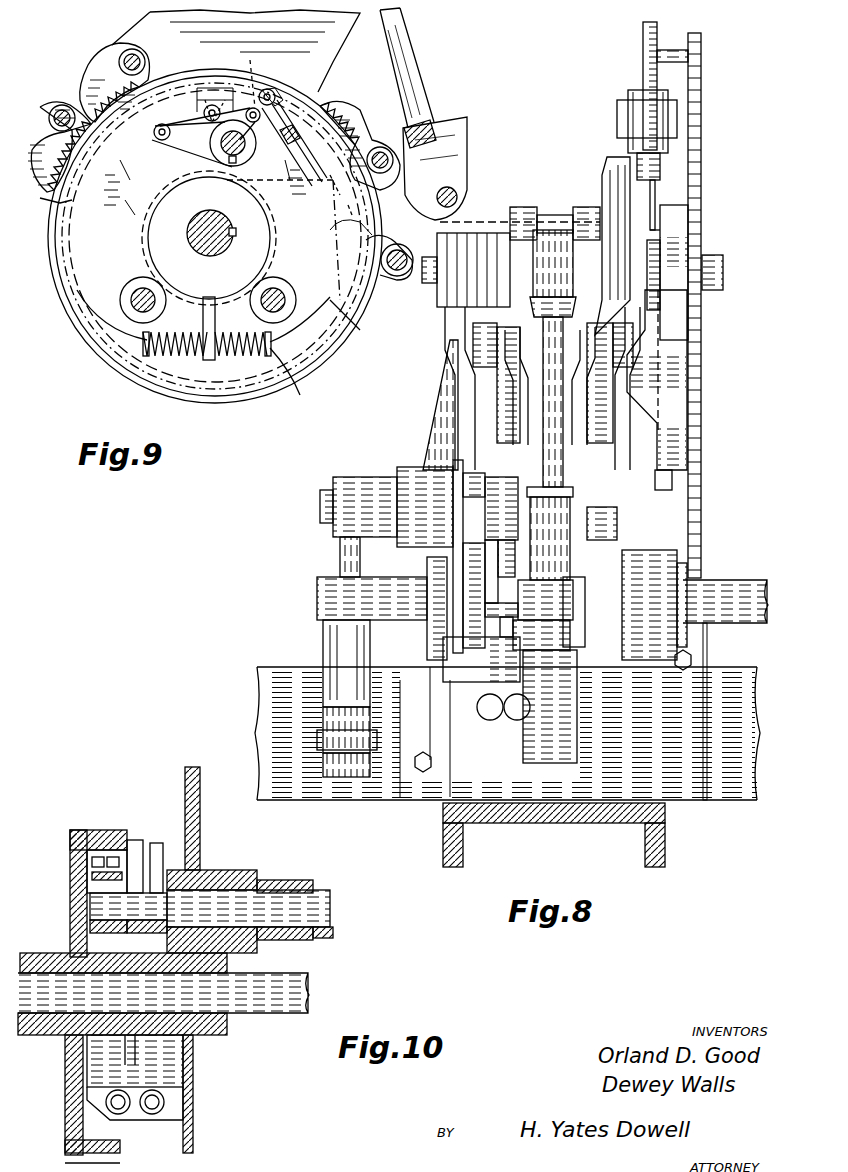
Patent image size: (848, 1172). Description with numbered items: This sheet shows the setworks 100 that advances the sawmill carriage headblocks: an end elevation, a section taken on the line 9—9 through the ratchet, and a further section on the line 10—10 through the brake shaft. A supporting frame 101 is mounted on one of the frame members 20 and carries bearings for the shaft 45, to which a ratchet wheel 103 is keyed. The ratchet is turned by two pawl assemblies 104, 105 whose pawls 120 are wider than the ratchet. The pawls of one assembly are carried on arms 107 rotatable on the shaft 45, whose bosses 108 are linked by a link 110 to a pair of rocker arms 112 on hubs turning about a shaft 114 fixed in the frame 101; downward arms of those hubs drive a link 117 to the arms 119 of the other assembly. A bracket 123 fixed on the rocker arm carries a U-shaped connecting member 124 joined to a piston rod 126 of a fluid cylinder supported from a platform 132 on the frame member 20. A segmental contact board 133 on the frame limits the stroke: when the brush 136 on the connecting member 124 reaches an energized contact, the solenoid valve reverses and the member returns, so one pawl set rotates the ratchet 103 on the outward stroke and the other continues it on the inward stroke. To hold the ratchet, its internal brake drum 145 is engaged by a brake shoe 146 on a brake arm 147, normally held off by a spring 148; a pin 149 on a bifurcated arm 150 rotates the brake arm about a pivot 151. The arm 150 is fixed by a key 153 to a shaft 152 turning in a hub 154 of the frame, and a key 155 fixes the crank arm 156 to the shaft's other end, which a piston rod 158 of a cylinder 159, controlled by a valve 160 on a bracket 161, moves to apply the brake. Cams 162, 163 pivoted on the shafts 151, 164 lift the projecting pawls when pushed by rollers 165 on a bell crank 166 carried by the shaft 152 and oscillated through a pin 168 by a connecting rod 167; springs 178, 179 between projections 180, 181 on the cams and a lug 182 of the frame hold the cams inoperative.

In FIG. 8, the section line 9— 9 is at (485, 440).
In FIG. 9, the section line 10— 10 is at (212, 110).
In FIG. 8, the frame member 20 is at (268, 690).
In FIG. 9, the shaft 45 is at (222, 238).
In FIG. 8, the shaft 45 is at (730, 582).
In FIG. 10, the shaft 45 is at (300, 982).
In FIG. 8, the setworks 100 is at (706, 433).
In FIG. 8, the supporting frame 101 is at (447, 443).
In FIG. 9, the ratchet wheel 103 is at (68, 318).
In FIG. 8, the ratchet wheel 103 is at (570, 705).
In FIG. 10, the ratchet wheel 103 is at (72, 843).
In FIG. 9, the pawl assembly 104 is at (385, 280).
In FIG. 9, the pawl assembly 105 is at (67, 83).
In FIG. 9, the arms 107 is at (440, 178).
In FIG. 8, the arms 107 is at (600, 597).
In FIG. 8, the bosses 108 is at (600, 546).
In FIG. 9, the link 110 is at (412, 47).
In FIG. 8, the link 110 is at (562, 462).
In FIG. 8, the rocker arms 112 is at (540, 197).
In FIG. 8, the shaft 114 is at (724, 268).
In FIG. 8, the link 117 is at (604, 428).
In FIG. 8, the arms 119 is at (505, 445).
In FIG. 9, the pawls 120 is at (112, 55).
In FIG. 8, the pawls 120 is at (577, 640).
In FIG. 8, the bracket 123 is at (612, 192).
In FIG. 8, the U-shaped connecting member 124 is at (643, 33).
In FIG. 8, the piston rod 126 is at (661, 170).
In FIG. 8, the platform 132 is at (667, 838).
In FIG. 8, the segmental contact board 133 is at (702, 106).
In FIG. 8, the contact or brush 136 is at (676, 50).
In FIG. 9, the brake drum 145 is at (175, 375).
In FIG. 9, the brake shoe 146 is at (336, 222).
In FIG. 9, the brake arm 147 is at (292, 184).
In FIG. 10, the brake arm 147 is at (110, 856).
In FIG. 10, the spring 148 is at (125, 1113).
In FIG. 10, the pin 149 is at (96, 879).
In FIG. 9, the bifurcated arm 150 is at (204, 113).
In FIG. 10, the bifurcated arm 150 is at (90, 871).
In FIG. 9, the pivot 151 is at (275, 295).
In FIG. 9, the shaft 152 is at (243, 152).
In FIG. 8, the shaft 152 is at (320, 508).
In FIG. 10, the shaft 152 is at (360, 883).
In FIG. 10, the key 153 is at (100, 927).
In FIG. 10, the hub 154 is at (245, 860).
In FIG. 10, the key 155 is at (334, 932).
In FIG. 10, the crank arm 156 is at (303, 868).
In FIG. 8, the key 158 is at (340, 558).
In FIG. 8, the cylinder 159 is at (330, 643).
In FIG. 8, the valve 160 is at (335, 717).
In FIG. 8, the bracket 161 is at (330, 763).
In FIG. 9, the cam 162 is at (335, 298).
In FIG. 9, the cam 163 is at (75, 240).
In FIG. 9, the shaft 164 is at (141, 297).
In FIG. 9, the rollers 165 is at (252, 70).
In FIG. 9, the bell crank 166 is at (190, 155).
In FIG. 9, the connecting rod 167 is at (315, 192).
In FIG. 9, the pin 168 is at (290, 78).
In FIG. 9, the spring 178 is at (272, 350).
In FIG. 10, the spring 178 is at (165, 1108).
In FIG. 9, the spring 179 is at (163, 356).
In FIG. 9, the projection 180 is at (272, 344).
In FIG. 8, the projection 180 is at (494, 720).
In FIG. 9, the projection 181 is at (145, 342).
In FIG. 9, the lug 182 is at (203, 356).